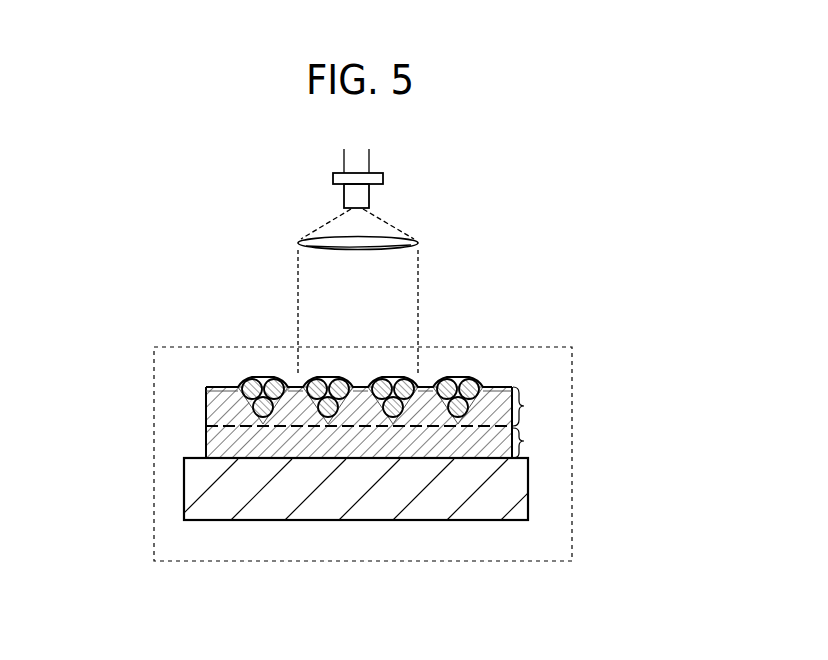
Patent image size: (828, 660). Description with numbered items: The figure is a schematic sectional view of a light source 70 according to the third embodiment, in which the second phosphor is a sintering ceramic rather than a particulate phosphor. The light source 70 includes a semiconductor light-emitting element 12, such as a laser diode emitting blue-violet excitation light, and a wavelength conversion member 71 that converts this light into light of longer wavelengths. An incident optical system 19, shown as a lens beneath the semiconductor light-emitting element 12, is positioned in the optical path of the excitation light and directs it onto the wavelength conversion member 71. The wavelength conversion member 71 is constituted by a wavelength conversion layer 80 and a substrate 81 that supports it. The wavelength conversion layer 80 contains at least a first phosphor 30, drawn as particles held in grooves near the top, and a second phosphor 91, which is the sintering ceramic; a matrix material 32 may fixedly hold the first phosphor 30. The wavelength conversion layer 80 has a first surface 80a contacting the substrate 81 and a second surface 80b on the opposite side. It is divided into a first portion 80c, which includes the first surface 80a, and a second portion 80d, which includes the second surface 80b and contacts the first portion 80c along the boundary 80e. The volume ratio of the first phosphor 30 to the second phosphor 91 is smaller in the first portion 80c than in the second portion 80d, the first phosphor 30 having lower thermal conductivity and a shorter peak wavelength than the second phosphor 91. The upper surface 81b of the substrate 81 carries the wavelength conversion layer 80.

The semiconductor light-emitting element 12 is at (355, 175).
The incident optical system 19 is at (417, 243).
The first phosphor 30 is at (250, 382).
The matrix material 32 is at (498, 385).
The light source 70 is at (228, 286).
The wavelength conversion member 71 is at (152, 457).
The wavelength conversion layer 80 is at (205, 432).
The first surface 80a is at (432, 468).
The second surface 80b is at (476, 372).
The first portion 80c is at (523, 440).
The second portion 80d is at (523, 405).
The boundary in resin layer 80e is at (300, 432).
The substrate 81 is at (192, 494).
The upper surface of substrate 81b is at (190, 449).
The second phosphor 91 is at (205, 408).